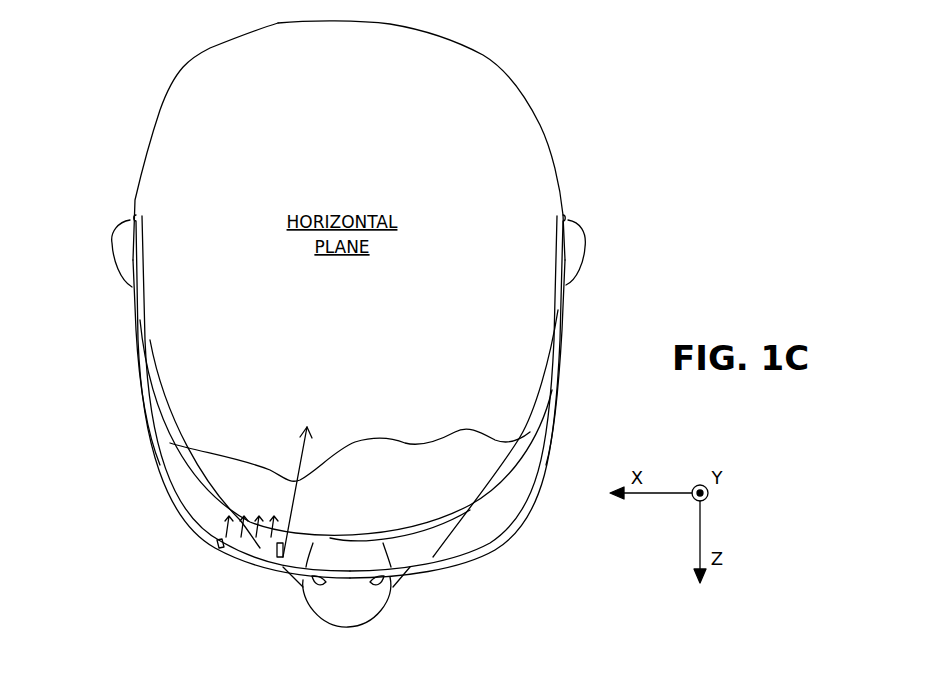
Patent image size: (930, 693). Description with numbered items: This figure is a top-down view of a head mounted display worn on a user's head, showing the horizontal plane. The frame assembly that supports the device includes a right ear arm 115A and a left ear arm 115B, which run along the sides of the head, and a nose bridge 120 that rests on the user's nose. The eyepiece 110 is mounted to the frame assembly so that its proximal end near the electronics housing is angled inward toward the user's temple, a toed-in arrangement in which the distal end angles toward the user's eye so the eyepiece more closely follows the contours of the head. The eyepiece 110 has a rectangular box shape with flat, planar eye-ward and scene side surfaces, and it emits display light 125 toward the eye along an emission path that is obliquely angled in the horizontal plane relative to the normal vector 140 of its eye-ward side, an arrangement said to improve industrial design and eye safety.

The right ear arm 115A is at (138, 388).
The left ear arm 115B is at (558, 370).
The normal vector 140 is at (300, 450).
The display light 125 is at (223, 523).
The eyepiece 110 is at (263, 553).
The nose bridge 120 is at (383, 580).